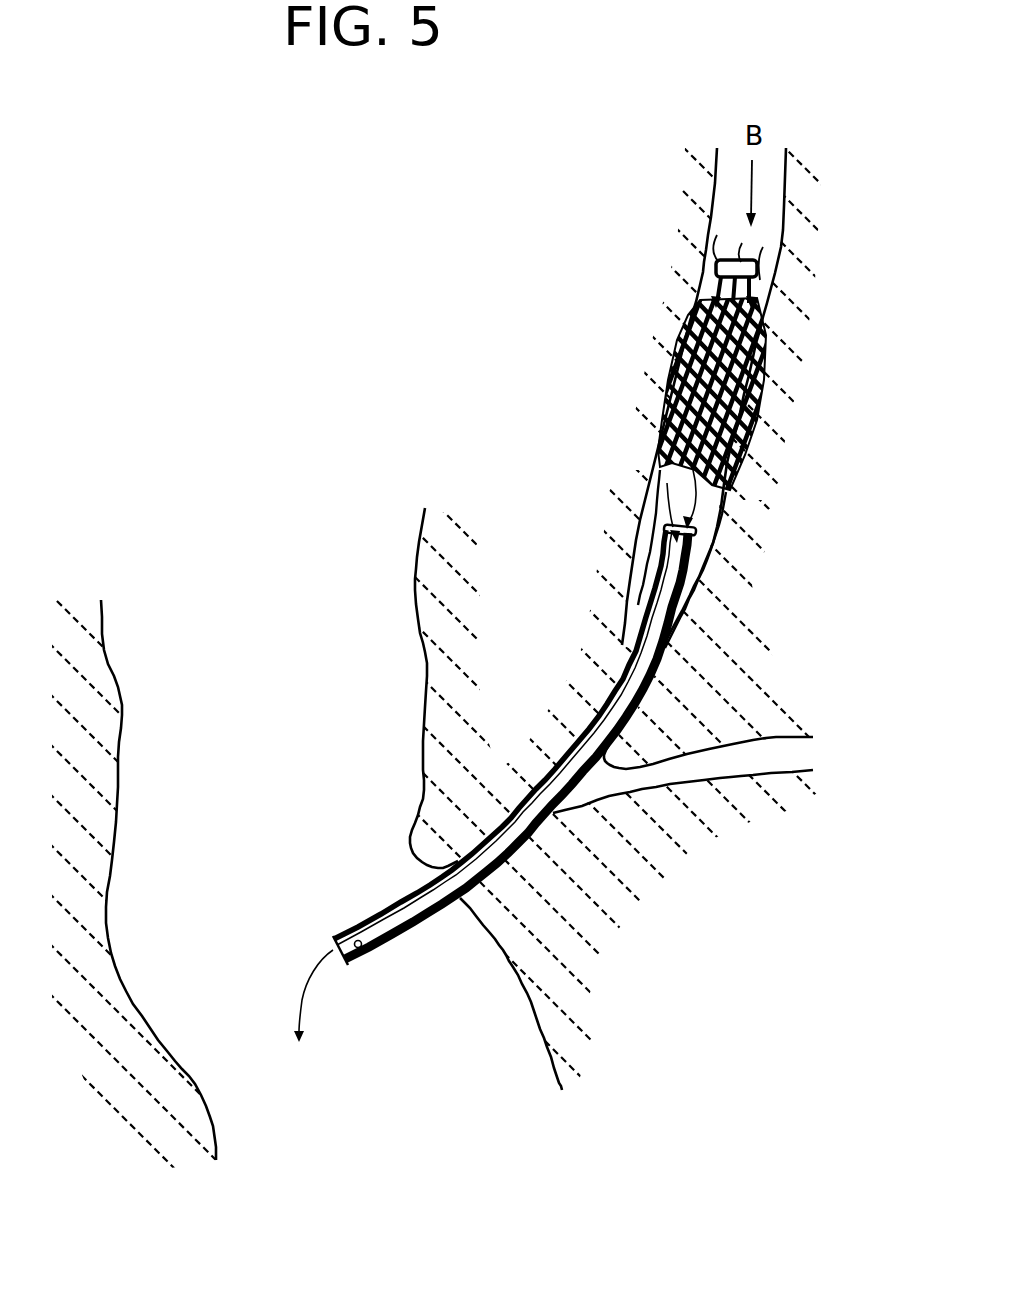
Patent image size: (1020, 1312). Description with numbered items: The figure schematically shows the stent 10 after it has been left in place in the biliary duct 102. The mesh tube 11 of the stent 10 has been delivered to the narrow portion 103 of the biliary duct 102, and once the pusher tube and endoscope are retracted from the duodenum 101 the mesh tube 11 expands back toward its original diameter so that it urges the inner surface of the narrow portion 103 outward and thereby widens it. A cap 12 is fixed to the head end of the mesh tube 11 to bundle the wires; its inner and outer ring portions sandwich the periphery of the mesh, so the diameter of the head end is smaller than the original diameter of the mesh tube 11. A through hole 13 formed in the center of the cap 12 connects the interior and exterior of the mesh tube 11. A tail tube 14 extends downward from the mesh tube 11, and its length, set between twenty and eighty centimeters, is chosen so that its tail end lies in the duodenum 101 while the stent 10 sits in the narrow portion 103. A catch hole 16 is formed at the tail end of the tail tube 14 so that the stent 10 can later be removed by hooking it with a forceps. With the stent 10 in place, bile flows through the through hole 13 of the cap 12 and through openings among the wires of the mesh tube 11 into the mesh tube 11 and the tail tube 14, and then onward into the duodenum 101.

The stent 10 is at (650, 450).
The mesh tube 11 is at (673, 383).
The cap 12 is at (717, 280).
The through hole 13 is at (755, 287).
The tail tube 14 is at (400, 902).
The catch hole 16 is at (362, 951).
The duodenum 101 is at (510, 1045).
The biliary duct 102 is at (717, 193).
The narrow portion 103 is at (675, 330).